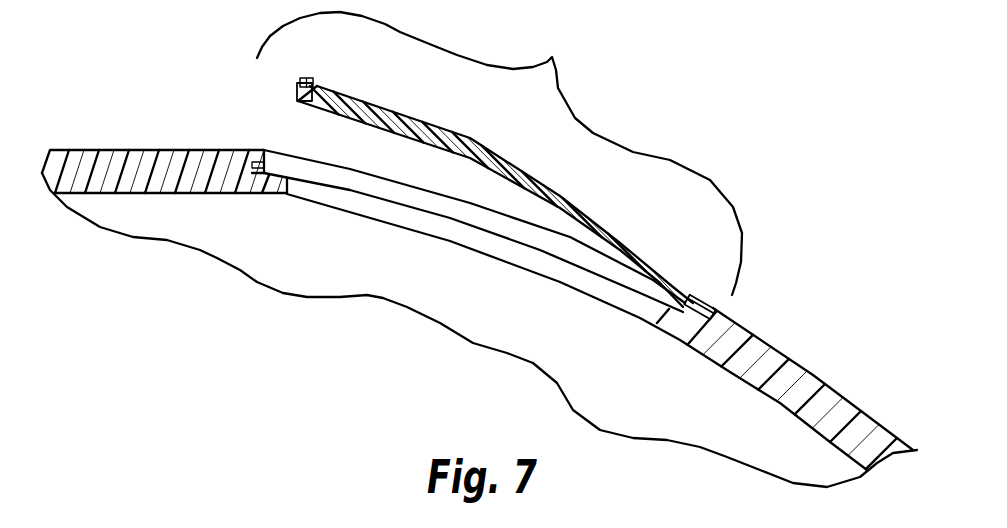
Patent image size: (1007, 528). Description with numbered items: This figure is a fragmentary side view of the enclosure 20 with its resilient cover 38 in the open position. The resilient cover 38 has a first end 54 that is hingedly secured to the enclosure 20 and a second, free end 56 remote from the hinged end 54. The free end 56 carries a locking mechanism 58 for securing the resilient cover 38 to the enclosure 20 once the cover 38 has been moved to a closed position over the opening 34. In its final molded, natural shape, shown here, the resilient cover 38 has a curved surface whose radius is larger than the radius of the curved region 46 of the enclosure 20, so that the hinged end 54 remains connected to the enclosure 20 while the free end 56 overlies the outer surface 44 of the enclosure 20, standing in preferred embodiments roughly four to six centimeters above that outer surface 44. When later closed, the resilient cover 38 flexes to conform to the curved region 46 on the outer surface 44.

The enclosure 20 is at (823, 140).
The opening 34 is at (577, 332).
The resilient cover 38 is at (474, 202).
The outer surface 44 is at (164, 122).
The curved region 46 is at (553, 57).
The first end 54 is at (785, 399).
The free end 56 is at (262, 87).
The locking mechanism 58 is at (341, 72).